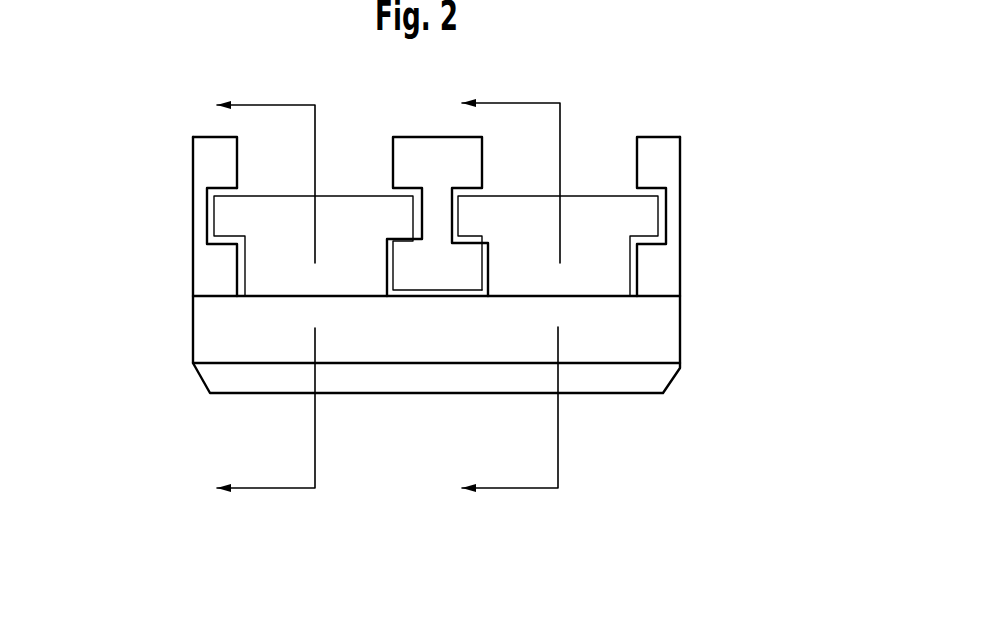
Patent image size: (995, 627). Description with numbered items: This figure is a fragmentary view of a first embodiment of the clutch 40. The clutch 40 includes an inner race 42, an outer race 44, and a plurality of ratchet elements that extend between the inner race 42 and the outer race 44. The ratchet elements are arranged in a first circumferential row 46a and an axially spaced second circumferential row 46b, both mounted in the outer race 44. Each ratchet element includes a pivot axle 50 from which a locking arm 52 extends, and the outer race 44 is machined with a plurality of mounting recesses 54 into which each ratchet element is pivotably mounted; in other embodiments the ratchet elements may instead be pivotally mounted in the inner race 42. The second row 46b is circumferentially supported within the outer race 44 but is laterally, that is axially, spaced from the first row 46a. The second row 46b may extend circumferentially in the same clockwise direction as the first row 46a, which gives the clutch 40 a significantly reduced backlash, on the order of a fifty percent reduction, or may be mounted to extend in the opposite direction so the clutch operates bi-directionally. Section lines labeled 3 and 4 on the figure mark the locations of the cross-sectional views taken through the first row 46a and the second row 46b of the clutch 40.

The clutch 40 is at (735, 151).
The inner race 42 is at (640, 340).
The outer race 44 is at (200, 175).
The first circumferential row of ratchet elements 46a is at (287, 273).
The second circumferential row of ratchet elements 46b is at (580, 268).
The pivot axle 50 is at (228, 213).
The locking arm 52 is at (320, 262).
The mounting recess 54 is at (413, 190).
The section line 3- 3 is at (255, 298).
The section line 4- 4 is at (501, 298).